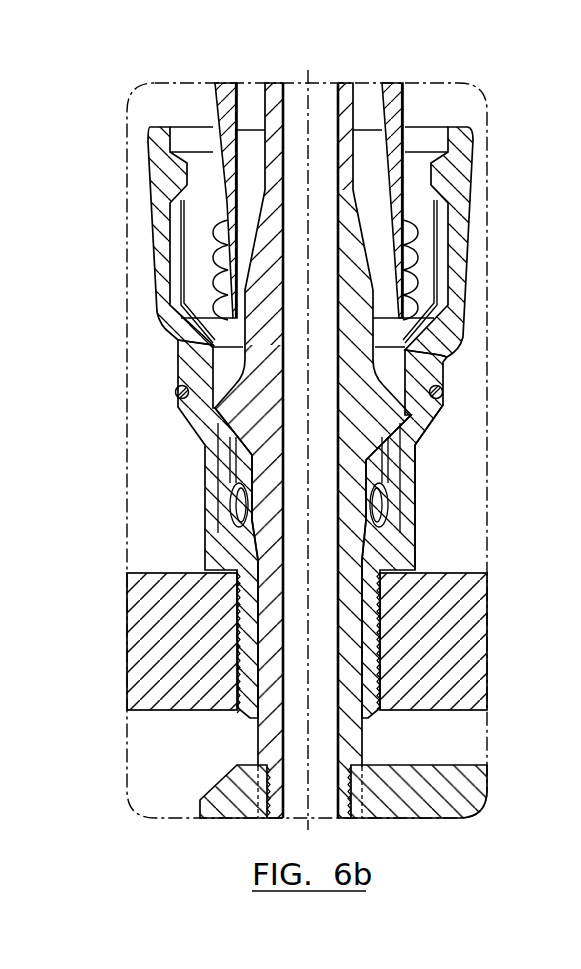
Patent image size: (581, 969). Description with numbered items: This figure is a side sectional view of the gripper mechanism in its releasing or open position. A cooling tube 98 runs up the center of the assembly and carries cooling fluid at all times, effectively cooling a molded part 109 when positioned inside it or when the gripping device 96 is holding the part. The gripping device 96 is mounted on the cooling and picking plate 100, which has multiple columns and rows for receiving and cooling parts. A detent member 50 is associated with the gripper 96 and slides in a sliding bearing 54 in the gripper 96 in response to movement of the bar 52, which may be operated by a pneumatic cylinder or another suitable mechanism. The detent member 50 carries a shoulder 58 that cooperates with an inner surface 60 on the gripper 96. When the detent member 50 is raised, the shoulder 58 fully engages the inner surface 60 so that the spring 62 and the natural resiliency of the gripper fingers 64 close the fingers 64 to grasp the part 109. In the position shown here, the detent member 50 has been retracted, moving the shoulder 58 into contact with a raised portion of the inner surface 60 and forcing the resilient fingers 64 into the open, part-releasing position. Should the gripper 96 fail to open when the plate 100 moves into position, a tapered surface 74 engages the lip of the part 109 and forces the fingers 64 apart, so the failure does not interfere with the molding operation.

The cooling tube 98 is at (323, 97).
The tapered surface 74 is at (172, 128).
The molded part 109 is at (410, 90).
The gripping device 96 is at (157, 240).
The gripper fingers 64 is at (460, 230).
The spring 62 is at (176, 392).
The detent member 50 is at (405, 358).
The inner surface 60 is at (423, 437).
The shoulder 58 is at (417, 453).
The plate 100 is at (150, 612).
The sliding bearing 54 is at (368, 603).
The bar 52 is at (431, 803).